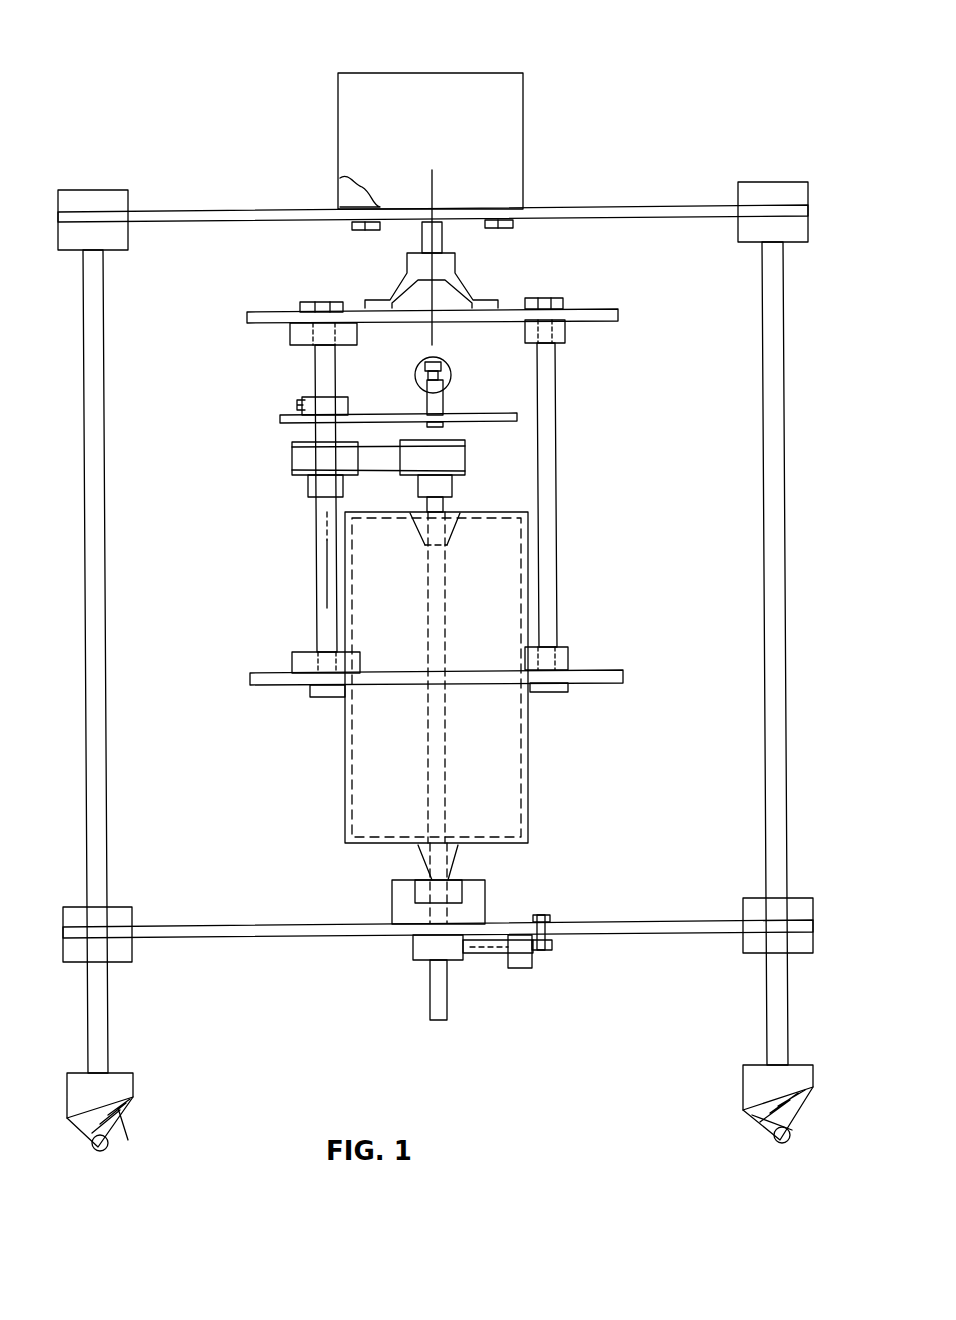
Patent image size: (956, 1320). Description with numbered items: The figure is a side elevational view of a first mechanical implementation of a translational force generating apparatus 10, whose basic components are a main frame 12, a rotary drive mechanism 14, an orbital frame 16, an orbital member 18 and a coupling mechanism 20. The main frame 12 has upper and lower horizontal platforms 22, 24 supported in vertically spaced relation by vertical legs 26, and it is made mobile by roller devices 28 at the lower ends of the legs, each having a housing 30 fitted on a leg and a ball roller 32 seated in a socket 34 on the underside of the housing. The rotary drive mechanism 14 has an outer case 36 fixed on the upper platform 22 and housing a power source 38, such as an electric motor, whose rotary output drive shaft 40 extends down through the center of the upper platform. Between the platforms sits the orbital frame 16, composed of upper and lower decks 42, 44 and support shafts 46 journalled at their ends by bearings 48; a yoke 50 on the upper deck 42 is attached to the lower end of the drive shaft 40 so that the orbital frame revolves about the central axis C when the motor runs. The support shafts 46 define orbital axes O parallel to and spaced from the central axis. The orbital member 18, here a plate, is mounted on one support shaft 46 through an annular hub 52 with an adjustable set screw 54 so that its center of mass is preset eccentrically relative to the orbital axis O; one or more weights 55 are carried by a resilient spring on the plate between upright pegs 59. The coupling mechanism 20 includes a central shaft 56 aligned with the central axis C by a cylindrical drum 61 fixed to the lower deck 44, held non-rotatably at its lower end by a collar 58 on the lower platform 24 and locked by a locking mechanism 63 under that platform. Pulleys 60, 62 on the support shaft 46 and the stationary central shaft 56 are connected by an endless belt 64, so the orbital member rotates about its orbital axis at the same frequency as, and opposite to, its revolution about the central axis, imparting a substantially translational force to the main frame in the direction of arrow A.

The translational force generating apparatus 10 is at (692, 103).
The main frame 12 is at (662, 203).
The rotary drive mechanism 14 is at (548, 125).
The orbital frame 16 is at (604, 306).
The orbital member 18 is at (500, 412).
The coupling mechanism 20 is at (285, 484).
The upper horizontal platform 22 is at (194, 212).
The lower horizontal platform 24 is at (190, 931).
The vertical legs 26 is at (105, 565).
The roller devices 28 is at (130, 1067).
The housing 30 is at (135, 1096).
The ball roller 32 is at (108, 1150).
The socket 34 is at (112, 1134).
The outer case 36 is at (383, 74).
The power source 38 is at (358, 190).
The rotary output drive shaft 40 is at (444, 238).
The upper horizontal deck 42 is at (266, 310).
The lower horizontal deck 44 is at (272, 688).
The support shafts 46 is at (317, 611).
The bearings 48 is at (290, 334).
The yoke 50 is at (458, 270).
The annular hub 52 is at (340, 397).
The adjustable set screw 54 is at (297, 405).
The weights 55 is at (452, 376).
The central shaft 56 is at (450, 496).
The collar 58 is at (392, 895).
The pegs 59 is at (426, 405).
The pulley 60 is at (293, 445).
The cylindrical drum 61 is at (528, 740).
The pulley 62 is at (462, 443).
The locking mechanism 63 is at (493, 962).
The endless belt 64 is at (292, 466).
The central axis C is at (438, 349).
The orbital axis O is at (322, 590).
The arrow A is at (693, 415).